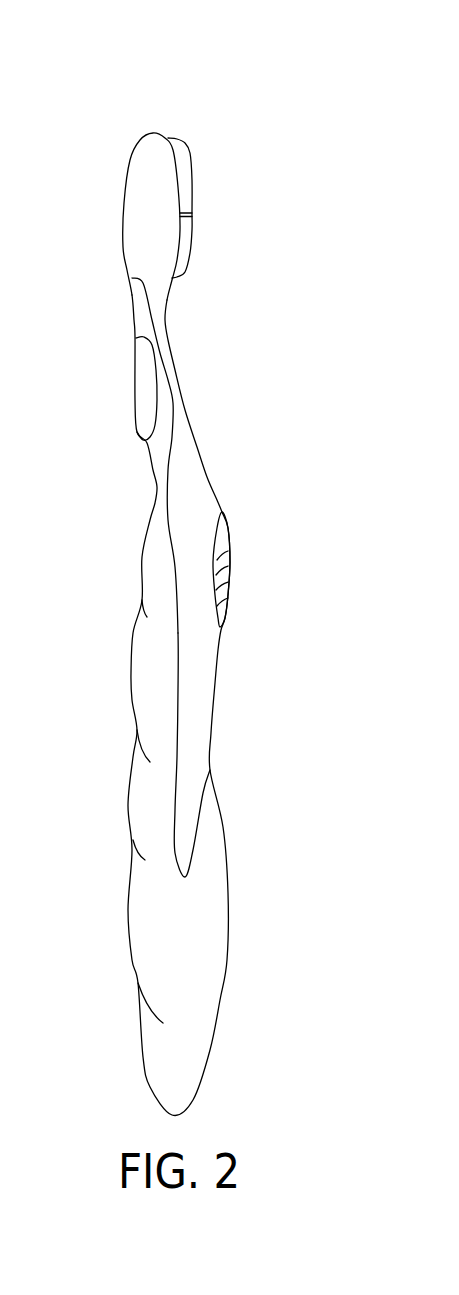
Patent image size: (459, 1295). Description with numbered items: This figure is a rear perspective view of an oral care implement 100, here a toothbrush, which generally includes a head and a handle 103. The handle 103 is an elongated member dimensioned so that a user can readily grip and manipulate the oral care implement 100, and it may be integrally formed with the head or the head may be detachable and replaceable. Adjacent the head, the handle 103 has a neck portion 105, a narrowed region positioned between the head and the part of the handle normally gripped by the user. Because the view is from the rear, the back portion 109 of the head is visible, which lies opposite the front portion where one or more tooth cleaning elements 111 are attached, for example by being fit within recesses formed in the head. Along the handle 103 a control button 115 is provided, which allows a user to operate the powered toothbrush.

The oral care implement 100 is at (95, 82).
The handle 103 is at (145, 803).
The neck portion 105 is at (142, 313).
The back portion 109 is at (147, 195).
The tooth cleaning elements 111 is at (183, 244).
The control button 115 is at (227, 567).